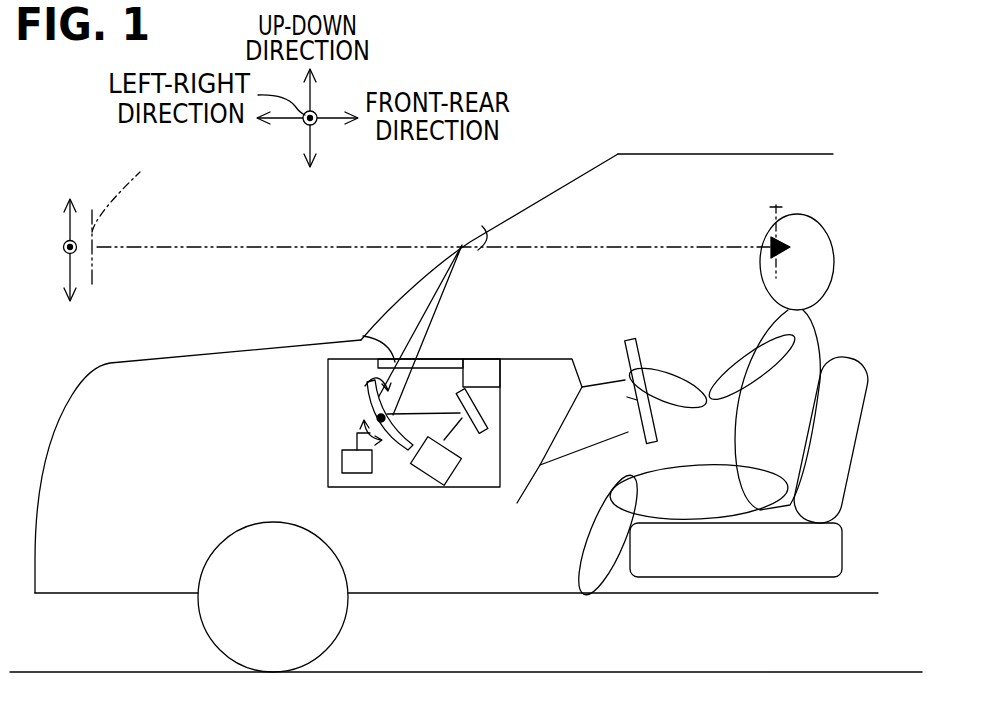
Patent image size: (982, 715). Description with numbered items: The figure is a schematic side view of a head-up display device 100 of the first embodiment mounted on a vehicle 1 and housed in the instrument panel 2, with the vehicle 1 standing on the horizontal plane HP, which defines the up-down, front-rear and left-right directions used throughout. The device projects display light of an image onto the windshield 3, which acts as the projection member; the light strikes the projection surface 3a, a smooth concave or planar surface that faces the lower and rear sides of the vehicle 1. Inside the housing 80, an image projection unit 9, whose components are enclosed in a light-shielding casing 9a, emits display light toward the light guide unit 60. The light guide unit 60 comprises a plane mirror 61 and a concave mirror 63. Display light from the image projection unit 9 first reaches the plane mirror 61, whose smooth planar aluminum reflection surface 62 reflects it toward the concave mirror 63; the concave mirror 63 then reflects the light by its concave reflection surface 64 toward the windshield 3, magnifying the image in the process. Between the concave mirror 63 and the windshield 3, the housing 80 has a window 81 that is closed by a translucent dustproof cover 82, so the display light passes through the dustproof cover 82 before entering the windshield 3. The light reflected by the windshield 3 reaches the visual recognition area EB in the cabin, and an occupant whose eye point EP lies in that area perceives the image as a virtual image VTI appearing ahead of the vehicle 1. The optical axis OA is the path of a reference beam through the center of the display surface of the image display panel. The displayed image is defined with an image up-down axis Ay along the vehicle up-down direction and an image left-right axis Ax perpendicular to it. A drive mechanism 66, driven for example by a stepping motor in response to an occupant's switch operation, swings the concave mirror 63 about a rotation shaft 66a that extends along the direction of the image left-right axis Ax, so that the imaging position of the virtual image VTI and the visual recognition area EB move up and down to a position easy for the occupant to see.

The vehicle 1 is at (798, 154).
The instrument panel 2 is at (543, 358).
The windshield 3 is at (535, 202).
The projection surface 3a is at (482, 235).
The image projection unit 9 is at (419, 500).
The casing 9a is at (425, 478).
The light guide unit 60 is at (457, 344).
The plane mirror 61 is at (500, 358).
The reflection surface 62 is at (454, 405).
The concave mirror 63 is at (433, 360).
The reflection surface 64 is at (366, 381).
The drive mechanism 66 is at (342, 460).
The rotation shaft 66a is at (377, 416).
The housing 80 is at (328, 478).
The window 81 is at (373, 330).
The dustproof cover 82 is at (460, 357).
The head-up display device 100 is at (396, 410).
The optical axis OA is at (465, 437).
The eye point EP is at (770, 243).
The visual recognition area EB is at (778, 208).
The horizontal plane HP is at (908, 670).
The virtual image VTI is at (142, 189).
The image left-right axis Ax is at (62, 247).
The image up-down axis Ay is at (68, 229).